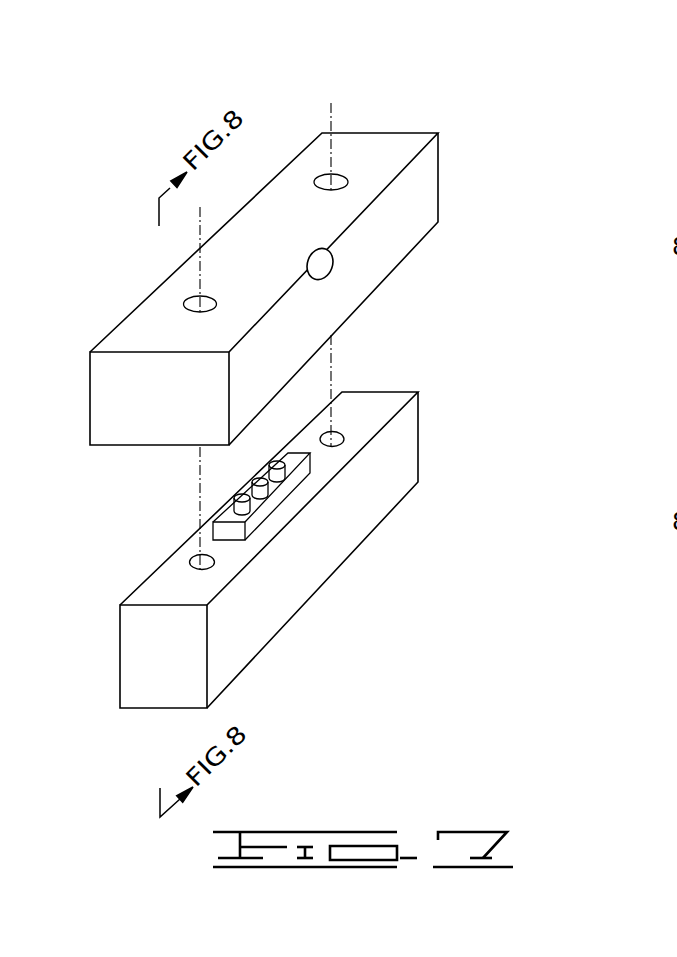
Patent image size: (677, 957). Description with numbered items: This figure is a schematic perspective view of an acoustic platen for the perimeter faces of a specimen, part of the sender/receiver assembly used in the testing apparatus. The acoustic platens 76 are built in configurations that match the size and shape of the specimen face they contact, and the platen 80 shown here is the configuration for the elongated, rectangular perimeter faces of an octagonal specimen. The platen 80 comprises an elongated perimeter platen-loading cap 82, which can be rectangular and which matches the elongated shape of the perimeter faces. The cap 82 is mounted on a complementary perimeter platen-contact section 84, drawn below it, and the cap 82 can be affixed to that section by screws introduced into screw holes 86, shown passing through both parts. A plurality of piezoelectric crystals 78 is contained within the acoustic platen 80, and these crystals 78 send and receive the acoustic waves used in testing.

The acoustic platen 76 is at (345, 379).
The platen for the perimeter faces 80 is at (345, 379).
The piezoelectric crystals 78 is at (267, 487).
The elongated perimeter platen-loading cap 82 is at (380, 257).
The perimeter platen-contact section 84 is at (375, 503).
The screw holes 86 is at (340, 180).